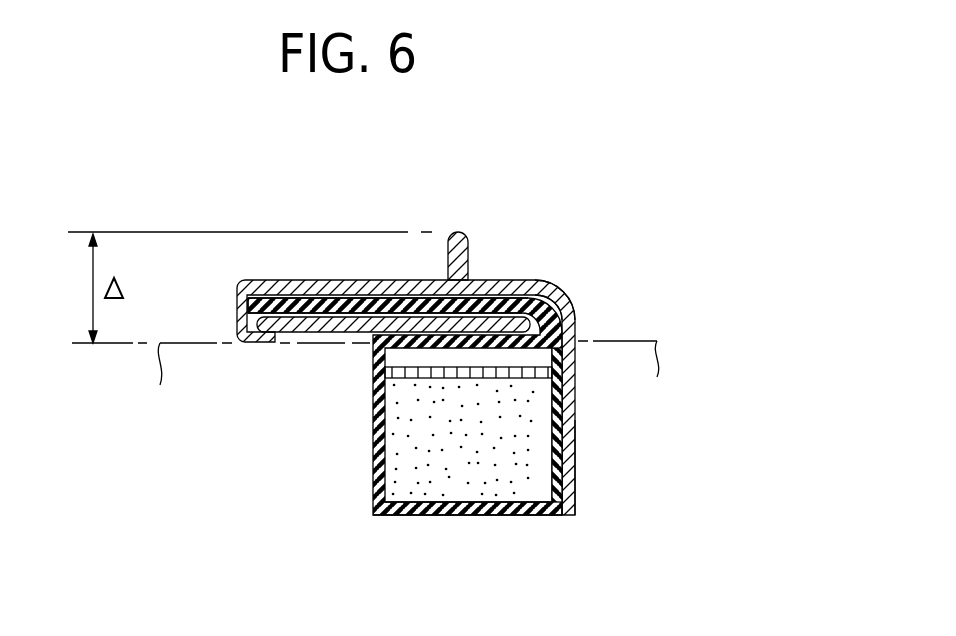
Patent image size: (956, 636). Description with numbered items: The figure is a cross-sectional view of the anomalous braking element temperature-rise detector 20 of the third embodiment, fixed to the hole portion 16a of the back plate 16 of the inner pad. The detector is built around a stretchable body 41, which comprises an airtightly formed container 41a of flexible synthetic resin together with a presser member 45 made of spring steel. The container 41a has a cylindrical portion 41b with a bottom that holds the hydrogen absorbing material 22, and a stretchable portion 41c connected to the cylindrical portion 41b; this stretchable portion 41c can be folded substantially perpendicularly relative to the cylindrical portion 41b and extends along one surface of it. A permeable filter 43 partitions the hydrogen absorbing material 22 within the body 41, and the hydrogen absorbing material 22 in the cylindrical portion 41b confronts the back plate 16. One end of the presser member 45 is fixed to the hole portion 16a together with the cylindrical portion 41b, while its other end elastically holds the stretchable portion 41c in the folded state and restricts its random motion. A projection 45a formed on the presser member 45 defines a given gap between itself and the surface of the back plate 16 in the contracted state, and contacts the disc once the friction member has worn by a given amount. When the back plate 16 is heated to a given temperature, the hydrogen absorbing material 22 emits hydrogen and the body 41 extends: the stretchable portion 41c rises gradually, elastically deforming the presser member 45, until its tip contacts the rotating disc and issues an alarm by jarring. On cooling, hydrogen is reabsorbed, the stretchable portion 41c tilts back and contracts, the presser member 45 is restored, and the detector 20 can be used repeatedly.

The back plate 16 is at (480, 336).
The hole portion 16a is at (567, 487).
The anomalous braking element temperature-rise detector 20 is at (579, 275).
The hydrogen absorbing material 22 is at (470, 483).
The stretchable body 41 is at (478, 379).
The container 41a is at (387, 522).
The cylindrical portion 41b is at (560, 413).
The stretchable portion 41c is at (318, 306).
The filter 43 is at (400, 374).
The presser member 45 is at (568, 307).
The projection 45a is at (460, 238).